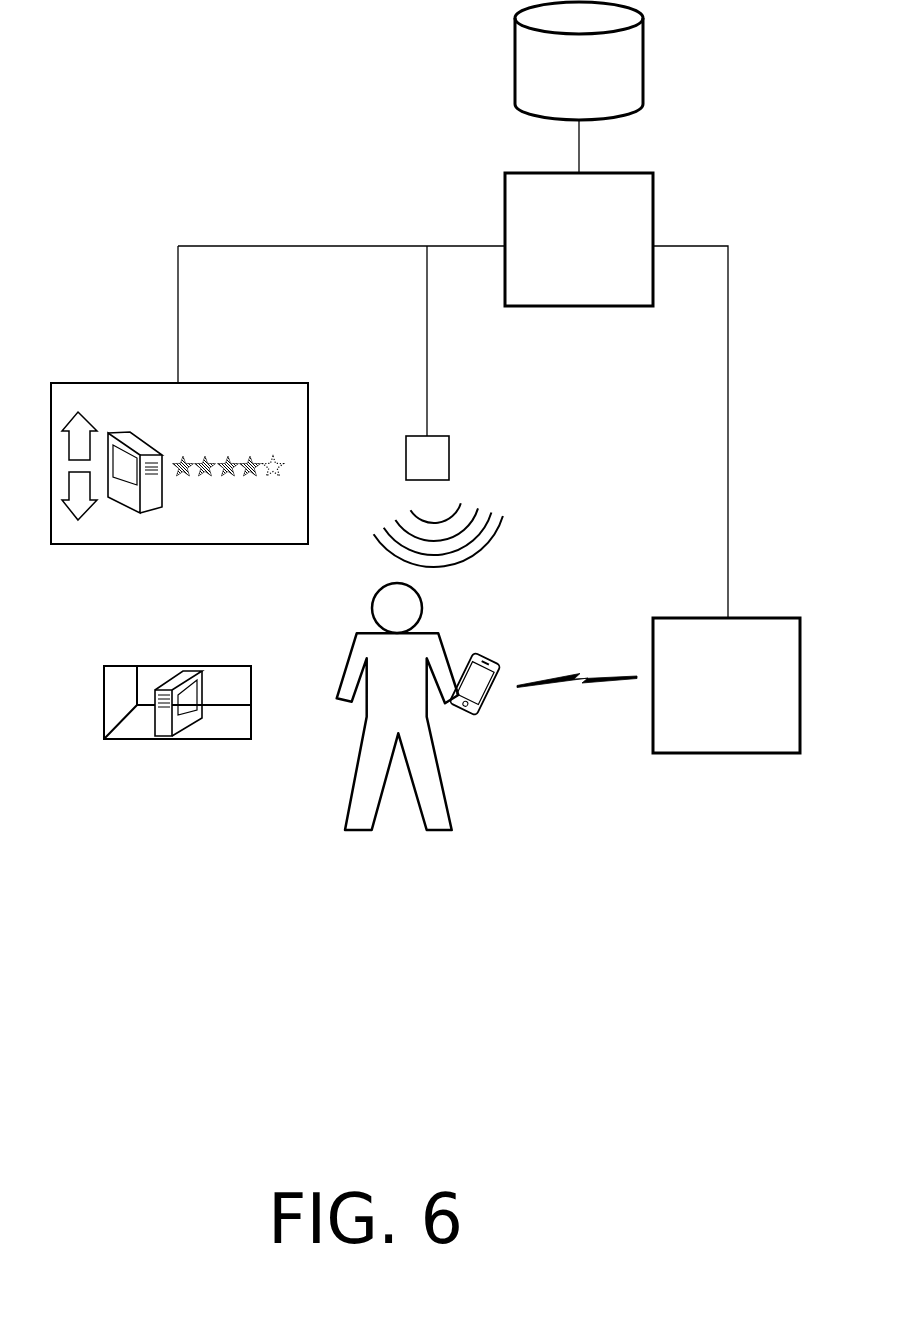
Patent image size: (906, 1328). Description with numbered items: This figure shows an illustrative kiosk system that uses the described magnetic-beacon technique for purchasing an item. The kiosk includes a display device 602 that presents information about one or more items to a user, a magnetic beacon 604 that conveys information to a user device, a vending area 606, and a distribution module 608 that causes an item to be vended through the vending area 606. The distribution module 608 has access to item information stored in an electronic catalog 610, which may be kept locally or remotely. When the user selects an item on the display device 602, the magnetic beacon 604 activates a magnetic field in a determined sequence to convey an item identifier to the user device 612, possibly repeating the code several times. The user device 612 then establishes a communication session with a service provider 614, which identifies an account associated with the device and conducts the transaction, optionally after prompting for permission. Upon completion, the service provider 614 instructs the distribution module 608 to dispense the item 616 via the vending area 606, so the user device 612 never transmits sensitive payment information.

The display device 602 is at (257, 383).
The magnetic beacon 604 is at (438, 436).
The vending area 606 is at (177, 703).
The distribution module 608 is at (579, 239).
The electronic catalog 610 is at (579, 61).
The user device 612 is at (482, 652).
The service provider 614 is at (726, 685).
The item 616 is at (162, 736).